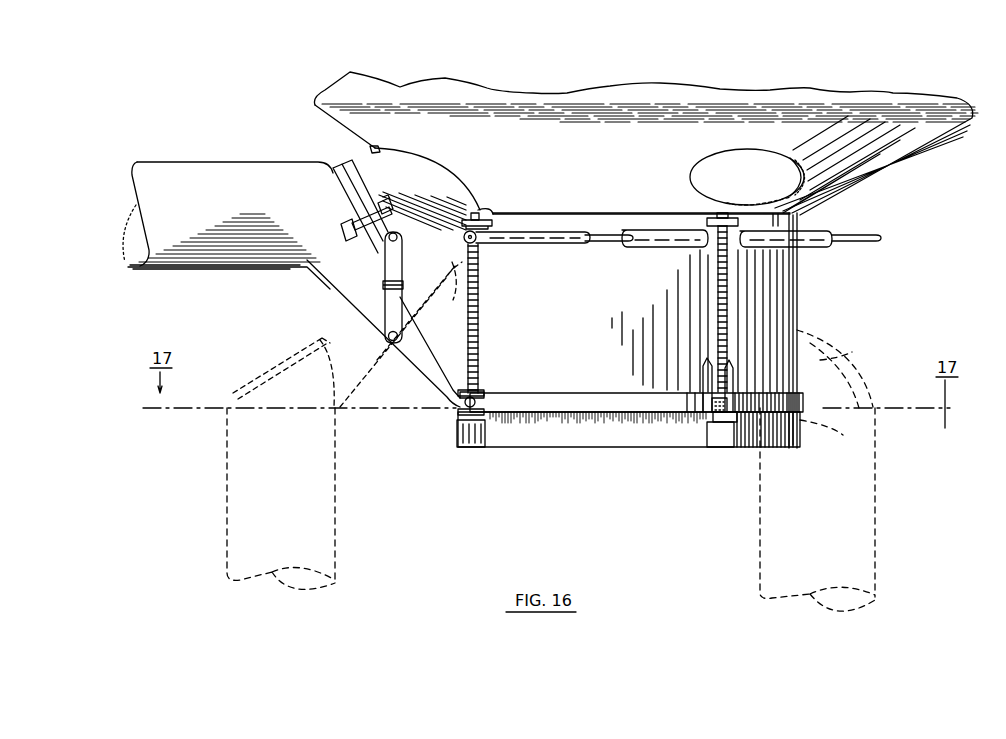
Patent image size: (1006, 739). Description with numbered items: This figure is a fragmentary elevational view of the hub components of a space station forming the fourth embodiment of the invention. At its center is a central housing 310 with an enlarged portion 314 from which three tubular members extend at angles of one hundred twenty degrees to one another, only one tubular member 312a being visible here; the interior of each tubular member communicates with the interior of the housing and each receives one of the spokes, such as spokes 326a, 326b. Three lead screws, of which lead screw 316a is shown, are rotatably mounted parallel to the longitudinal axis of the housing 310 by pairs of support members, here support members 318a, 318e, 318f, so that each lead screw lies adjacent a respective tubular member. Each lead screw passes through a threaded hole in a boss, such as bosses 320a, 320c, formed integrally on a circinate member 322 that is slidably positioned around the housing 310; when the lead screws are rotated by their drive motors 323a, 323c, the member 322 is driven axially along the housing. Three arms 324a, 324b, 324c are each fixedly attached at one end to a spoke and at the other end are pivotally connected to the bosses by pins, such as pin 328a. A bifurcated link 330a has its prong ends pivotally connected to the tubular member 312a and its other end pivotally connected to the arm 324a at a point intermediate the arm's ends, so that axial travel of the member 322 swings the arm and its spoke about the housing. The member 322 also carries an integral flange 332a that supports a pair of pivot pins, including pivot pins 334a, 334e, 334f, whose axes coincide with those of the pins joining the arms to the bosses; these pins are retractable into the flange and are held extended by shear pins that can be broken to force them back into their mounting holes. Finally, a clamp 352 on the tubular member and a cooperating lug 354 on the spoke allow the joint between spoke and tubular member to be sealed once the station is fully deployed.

The central housing 310 is at (804, 299).
The tubular member 312a is at (378, 148).
The enlarged portion 314 is at (938, 152).
The lead screw 316a is at (480, 342).
The support member 318a is at (458, 405).
The support member 318e is at (714, 424).
The support member 318f is at (712, 222).
The boss 320a is at (466, 258).
The boss 320c is at (714, 414).
The circinate member 322 is at (610, 416).
The drive motor 323a is at (463, 442).
The drive motor 323c is at (722, 448).
The arm 324a is at (320, 288).
The arm 324b is at (855, 352).
The arm 324c is at (702, 384).
The spoke 326a is at (128, 236).
The spoke 326b is at (855, 522).
The pin 328a is at (478, 406).
The bifurcated link 330a is at (384, 298).
The flange 332a is at (537, 232).
The pivot pin 334a is at (478, 243).
The pivot pin 334e is at (878, 242).
The pivot pin 334f is at (600, 243).
The clamp 352 is at (341, 224).
The lug 354 is at (388, 198).